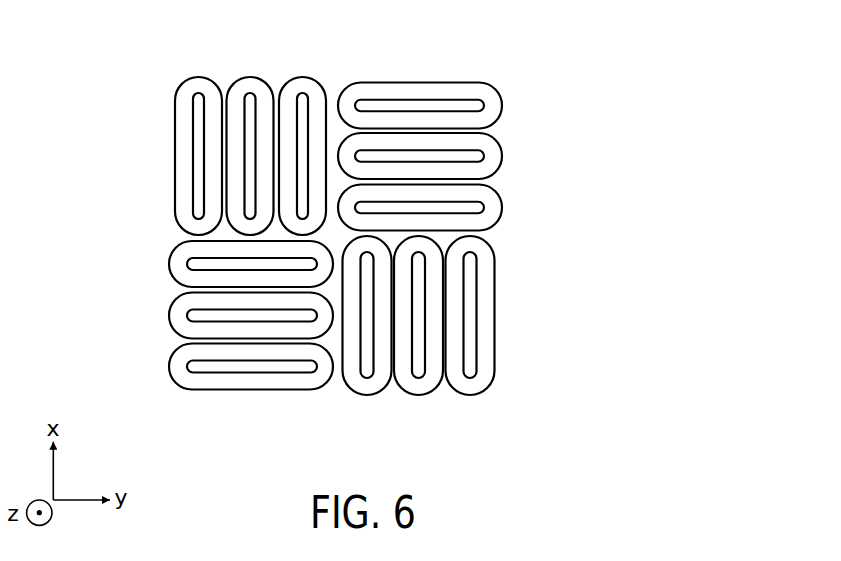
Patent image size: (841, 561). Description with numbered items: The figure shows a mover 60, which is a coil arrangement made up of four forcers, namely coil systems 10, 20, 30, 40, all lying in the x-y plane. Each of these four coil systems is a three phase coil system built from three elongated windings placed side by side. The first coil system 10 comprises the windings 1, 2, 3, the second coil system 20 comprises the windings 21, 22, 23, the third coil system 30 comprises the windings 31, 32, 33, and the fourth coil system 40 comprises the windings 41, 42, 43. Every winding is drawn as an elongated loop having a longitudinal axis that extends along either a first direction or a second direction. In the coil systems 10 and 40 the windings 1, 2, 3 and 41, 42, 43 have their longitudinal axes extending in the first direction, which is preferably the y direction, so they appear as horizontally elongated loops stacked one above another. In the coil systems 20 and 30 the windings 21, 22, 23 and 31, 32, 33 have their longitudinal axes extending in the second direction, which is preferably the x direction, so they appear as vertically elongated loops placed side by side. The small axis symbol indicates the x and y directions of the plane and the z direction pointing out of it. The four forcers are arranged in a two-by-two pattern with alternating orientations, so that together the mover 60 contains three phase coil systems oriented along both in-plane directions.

The winding 1 is at (180, 374).
The winding 2 is at (180, 319).
The winding 3 is at (178, 268).
The coil system 10 is at (229, 356).
The coil system 20 is at (468, 345).
The winding 21 is at (368, 388).
The winding 22 is at (425, 385).
The winding 23 is at (480, 387).
The coil system 30 is at (204, 130).
The winding 31 is at (195, 85).
The winding 32 is at (248, 82).
The winding 33 is at (307, 83).
The coil system 40 is at (500, 154).
The winding 41 is at (495, 103).
The winding 42 is at (495, 157).
The winding 43 is at (495, 210).
The mover 60 is at (372, 260).